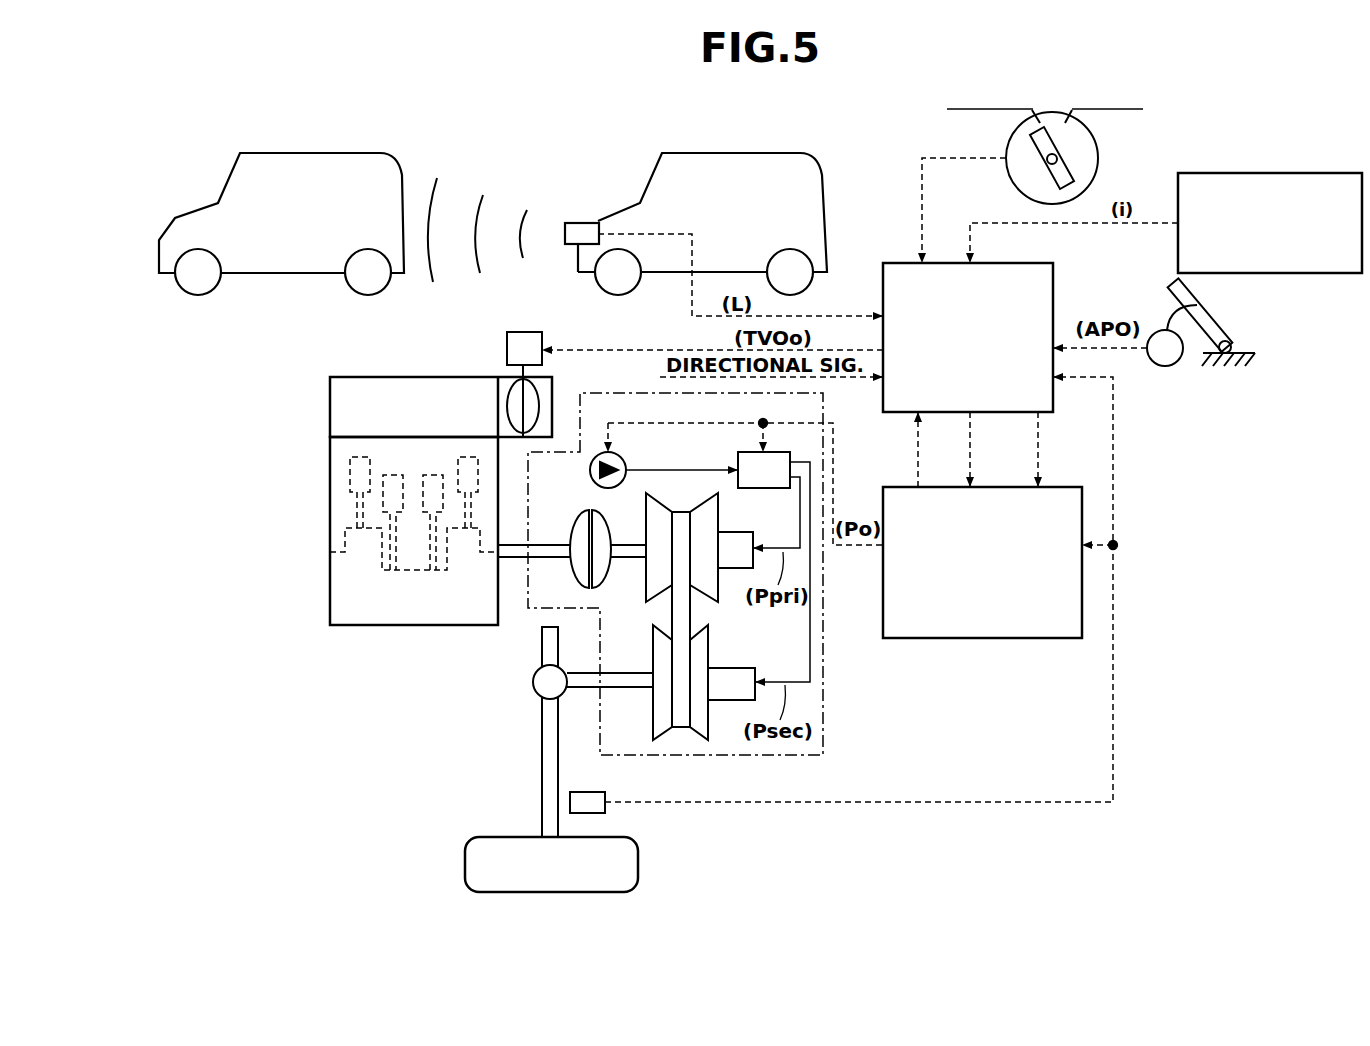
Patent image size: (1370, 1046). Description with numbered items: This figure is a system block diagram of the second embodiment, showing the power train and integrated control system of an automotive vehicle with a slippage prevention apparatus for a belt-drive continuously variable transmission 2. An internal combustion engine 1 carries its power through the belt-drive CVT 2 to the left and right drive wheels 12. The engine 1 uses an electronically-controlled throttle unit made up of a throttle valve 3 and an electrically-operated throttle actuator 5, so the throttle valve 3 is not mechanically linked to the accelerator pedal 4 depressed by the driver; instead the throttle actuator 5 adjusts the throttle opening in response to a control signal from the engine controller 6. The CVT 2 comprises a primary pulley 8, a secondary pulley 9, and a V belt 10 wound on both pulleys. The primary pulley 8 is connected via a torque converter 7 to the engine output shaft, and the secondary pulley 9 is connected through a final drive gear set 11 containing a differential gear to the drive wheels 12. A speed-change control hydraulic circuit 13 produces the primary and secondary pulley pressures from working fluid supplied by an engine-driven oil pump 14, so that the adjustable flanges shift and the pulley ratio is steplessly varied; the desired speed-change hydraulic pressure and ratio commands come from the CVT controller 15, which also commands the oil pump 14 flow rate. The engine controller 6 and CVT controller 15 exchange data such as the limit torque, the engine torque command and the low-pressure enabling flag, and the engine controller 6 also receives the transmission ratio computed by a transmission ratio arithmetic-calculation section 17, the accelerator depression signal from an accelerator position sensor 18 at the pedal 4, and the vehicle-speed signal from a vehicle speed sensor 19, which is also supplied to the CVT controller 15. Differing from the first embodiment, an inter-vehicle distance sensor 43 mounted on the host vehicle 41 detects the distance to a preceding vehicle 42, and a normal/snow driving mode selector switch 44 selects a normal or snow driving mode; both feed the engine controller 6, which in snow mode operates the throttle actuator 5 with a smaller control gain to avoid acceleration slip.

The internal combustion engine 1 is at (396, 377).
The belt-drive continuously variable transmission 2 is at (827, 682).
The throttle valve 3 is at (511, 392).
The accelerator pedal 4 is at (1228, 334).
The throttle actuator 5 is at (523, 332).
The engine controller 6 is at (1053, 290).
The torque converter 7 is at (570, 578).
The primary pulley 8 is at (656, 510).
The secondary pulley 9 is at (712, 715).
The V belt 10 is at (665, 621).
The final drive gear set 11 is at (533, 688).
The drive wheels 12 is at (465, 855).
The speed-change control hydraulic circuit 13 is at (738, 456).
The oil pump 14 is at (596, 480).
The CVT controller 15 is at (972, 638).
The transmission ratio arithmetic-calculation section 17 is at (1295, 173).
The accelerator position sensor 18 is at (1172, 342).
The vehicle speed sensor 19 is at (605, 812).
The host vehicle 41 is at (818, 175).
The preceding vehicle 42 is at (400, 172).
The inter-vehicle distance sensor 43 is at (578, 223).
The normal/snow driving mode selector switch 44 is at (1098, 150).